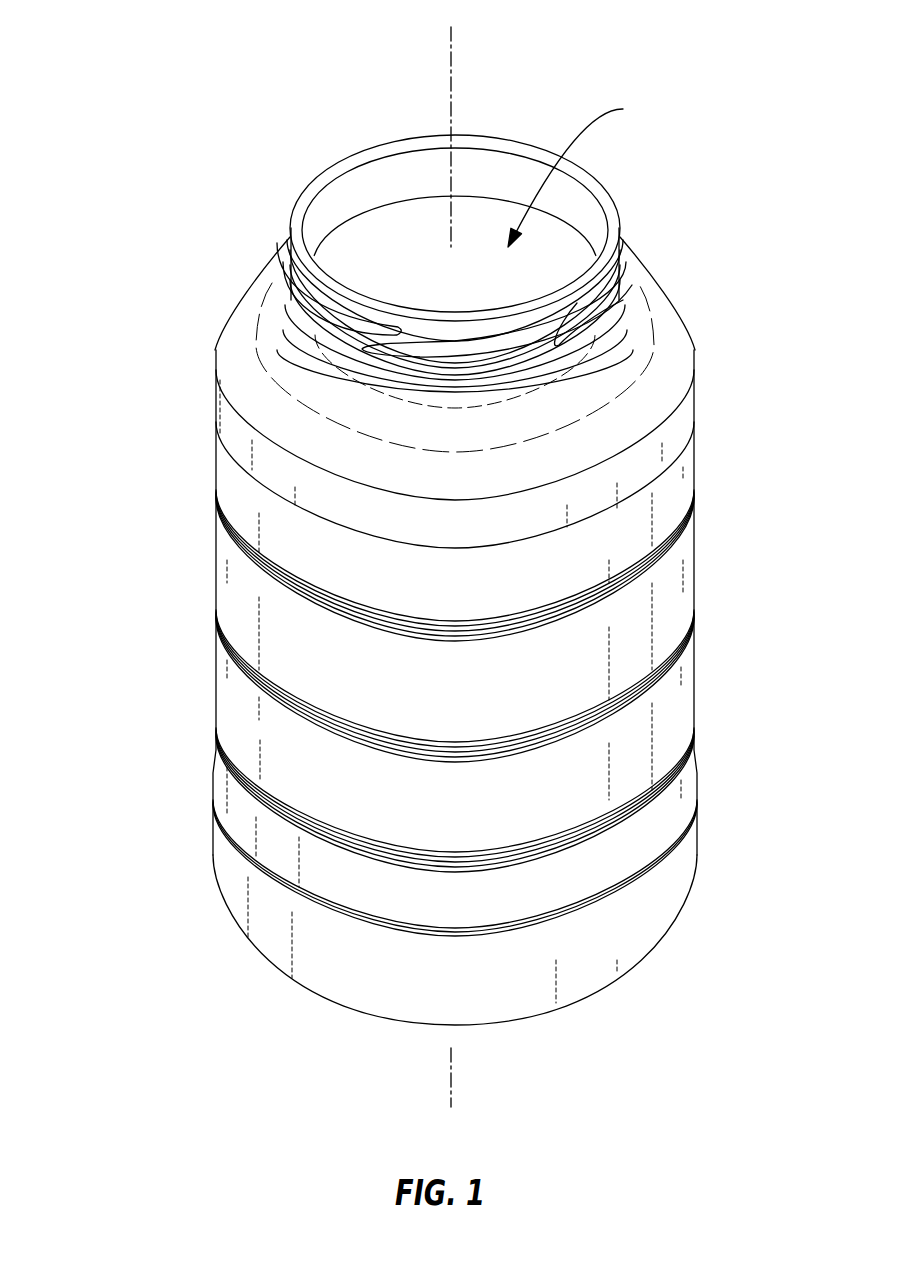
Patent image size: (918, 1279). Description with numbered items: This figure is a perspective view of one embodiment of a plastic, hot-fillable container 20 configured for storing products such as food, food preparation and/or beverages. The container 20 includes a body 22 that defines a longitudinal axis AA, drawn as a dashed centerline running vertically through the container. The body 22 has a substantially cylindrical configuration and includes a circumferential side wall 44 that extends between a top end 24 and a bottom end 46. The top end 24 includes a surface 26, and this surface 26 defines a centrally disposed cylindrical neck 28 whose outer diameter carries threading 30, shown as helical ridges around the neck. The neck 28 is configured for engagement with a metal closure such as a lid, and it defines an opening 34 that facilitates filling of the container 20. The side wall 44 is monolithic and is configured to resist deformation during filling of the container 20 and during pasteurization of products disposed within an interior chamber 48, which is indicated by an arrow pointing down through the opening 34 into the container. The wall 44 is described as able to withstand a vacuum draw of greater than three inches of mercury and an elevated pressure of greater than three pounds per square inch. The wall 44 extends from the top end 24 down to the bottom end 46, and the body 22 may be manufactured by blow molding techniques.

The container 20 is at (172, 132).
The body 22 is at (238, 495).
The top end 24 is at (657, 270).
The surface 26 is at (290, 238).
The cylindrical neck 28 is at (347, 305).
The threading 30 is at (512, 338).
The opening 34 is at (382, 252).
The circumferential side wall 44 is at (667, 593).
The bottom end 46 is at (633, 970).
The interior chamber 48 is at (580, 172).
The longitudinal axis AA is at (451, 60).